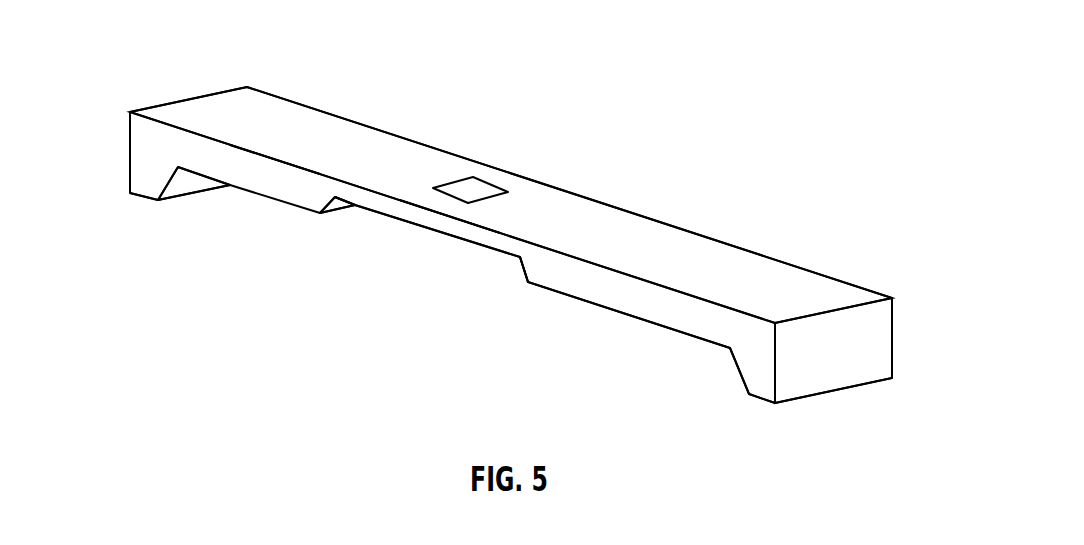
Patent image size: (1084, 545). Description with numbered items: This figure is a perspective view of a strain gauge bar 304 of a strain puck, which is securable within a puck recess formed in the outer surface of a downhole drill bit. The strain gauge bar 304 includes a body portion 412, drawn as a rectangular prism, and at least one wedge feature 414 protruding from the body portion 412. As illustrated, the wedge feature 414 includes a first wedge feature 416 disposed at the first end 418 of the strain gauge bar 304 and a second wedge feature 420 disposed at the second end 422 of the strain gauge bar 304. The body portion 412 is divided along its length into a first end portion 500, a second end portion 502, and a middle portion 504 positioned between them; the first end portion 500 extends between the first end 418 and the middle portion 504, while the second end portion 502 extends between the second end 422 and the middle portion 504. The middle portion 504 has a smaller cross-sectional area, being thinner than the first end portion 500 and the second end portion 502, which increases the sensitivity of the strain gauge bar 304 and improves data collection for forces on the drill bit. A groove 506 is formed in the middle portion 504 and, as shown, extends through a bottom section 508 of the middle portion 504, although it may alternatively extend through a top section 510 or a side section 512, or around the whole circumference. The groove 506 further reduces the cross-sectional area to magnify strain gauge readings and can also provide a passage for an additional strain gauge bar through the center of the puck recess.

The strain gauge bar 304 is at (557, 128).
The body portion 412 is at (320, 117).
The first end 418 is at (128, 123).
The wedge feature 414 is at (140, 178).
The first wedge feature 416 is at (165, 182).
The first end portion 500 is at (270, 172).
The bottom section 508 is at (320, 214).
The side section 512 is at (348, 196).
The middle portion 504 is at (448, 221).
The top section 510 is at (417, 167).
The second end portion 502 is at (670, 318).
The groove 506 is at (528, 270).
The second wedge feature 420 is at (768, 385).
The second end 422 is at (842, 367).